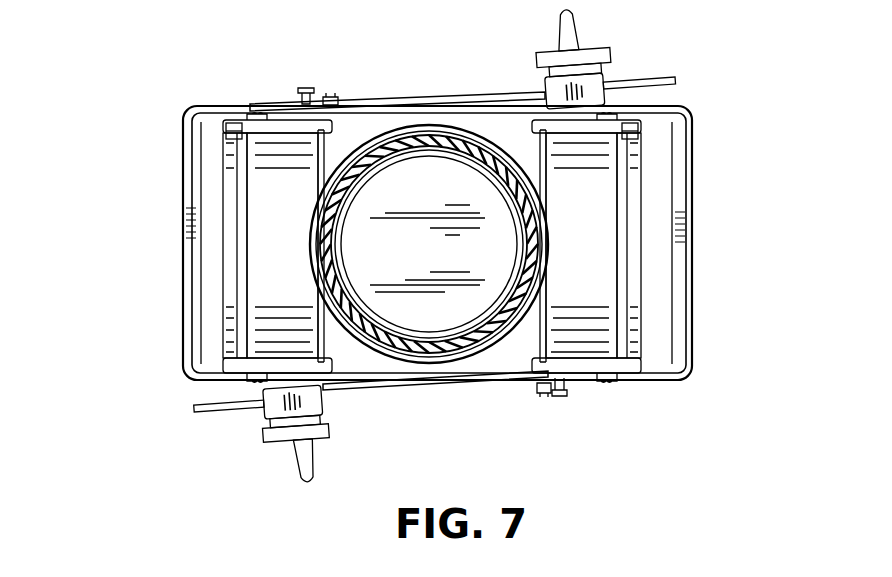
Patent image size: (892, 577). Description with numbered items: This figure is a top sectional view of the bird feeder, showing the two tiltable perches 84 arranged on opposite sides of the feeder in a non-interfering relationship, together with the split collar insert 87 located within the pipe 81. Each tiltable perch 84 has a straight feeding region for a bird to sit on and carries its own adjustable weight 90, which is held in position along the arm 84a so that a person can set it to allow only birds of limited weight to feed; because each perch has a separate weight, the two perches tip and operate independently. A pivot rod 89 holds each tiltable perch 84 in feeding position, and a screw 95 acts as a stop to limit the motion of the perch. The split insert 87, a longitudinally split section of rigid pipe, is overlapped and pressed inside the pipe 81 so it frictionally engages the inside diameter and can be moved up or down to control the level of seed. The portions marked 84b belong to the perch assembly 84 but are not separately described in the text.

The pipe 81 is at (413, 127).
The tiltable perch 84 is at (183, 152).
The arm 84a is at (470, 98).
The side pad 84b is at (190, 272).
The cylindrical split insert 87 is at (352, 244).
The pivot rod 89 is at (333, 96).
The adjustable weight 90 is at (602, 82).
The screw 95 is at (304, 88).